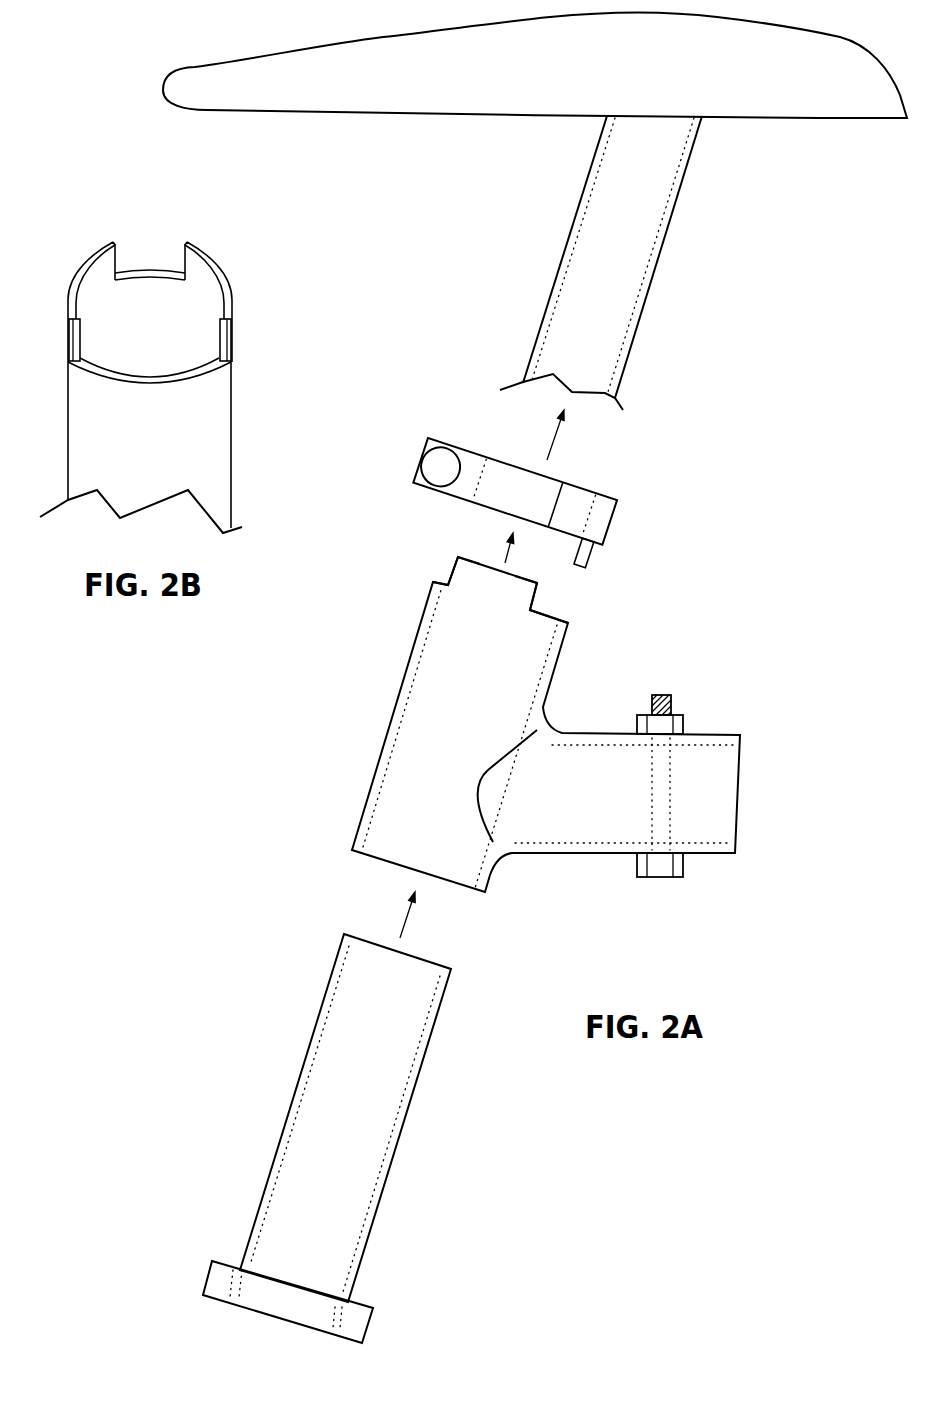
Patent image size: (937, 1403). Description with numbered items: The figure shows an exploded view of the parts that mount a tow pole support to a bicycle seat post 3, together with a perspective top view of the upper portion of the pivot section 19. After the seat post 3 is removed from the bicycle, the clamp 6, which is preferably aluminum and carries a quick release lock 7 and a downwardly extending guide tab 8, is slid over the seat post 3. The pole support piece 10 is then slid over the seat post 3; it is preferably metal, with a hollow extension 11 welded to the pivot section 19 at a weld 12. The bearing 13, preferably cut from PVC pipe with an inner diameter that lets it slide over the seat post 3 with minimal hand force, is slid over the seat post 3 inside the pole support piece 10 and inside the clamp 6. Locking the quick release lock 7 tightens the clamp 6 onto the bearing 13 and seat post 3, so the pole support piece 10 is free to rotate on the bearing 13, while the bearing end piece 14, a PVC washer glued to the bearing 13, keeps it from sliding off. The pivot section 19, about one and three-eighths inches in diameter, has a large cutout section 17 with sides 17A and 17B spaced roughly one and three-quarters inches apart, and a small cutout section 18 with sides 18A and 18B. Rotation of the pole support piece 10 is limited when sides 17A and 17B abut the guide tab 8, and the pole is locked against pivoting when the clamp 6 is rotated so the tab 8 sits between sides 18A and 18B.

In FIG. 2A, the seat post 3 is at (645, 267).
In FIG. 2A, the clamp 6 is at (577, 475).
In FIG. 2A, the quick release lock 7 is at (429, 462).
In FIG. 2A, the guide tab 8 is at (587, 545).
In FIG. 2A, the pole support piece 10 is at (604, 891).
In FIG. 2A, the hollow extension 11 is at (610, 725).
In FIG. 2A, the weld 12 is at (482, 757).
In FIG. 2A, the bearing 13 is at (398, 1105).
In FIG. 2A, the bearing end piece 14 is at (367, 1304).
In FIG. 2B, the large cutout section 17 is at (144, 367).
In FIG. 2A, the side 17A is at (529, 594).
In FIG. 2B, the side 17A is at (62, 330).
In FIG. 2B, the side 17B is at (215, 337).
In FIG. 2B, the small cutout section 18 is at (142, 260).
In FIG. 2B, the side 18A is at (174, 252).
In FIG. 2A, the side 18B is at (442, 557).
In FIG. 2B, the side 18B is at (109, 255).
In FIG. 2A, the pivot section 19 is at (379, 724).
In FIG. 2B, the pivot section 19 is at (224, 431).